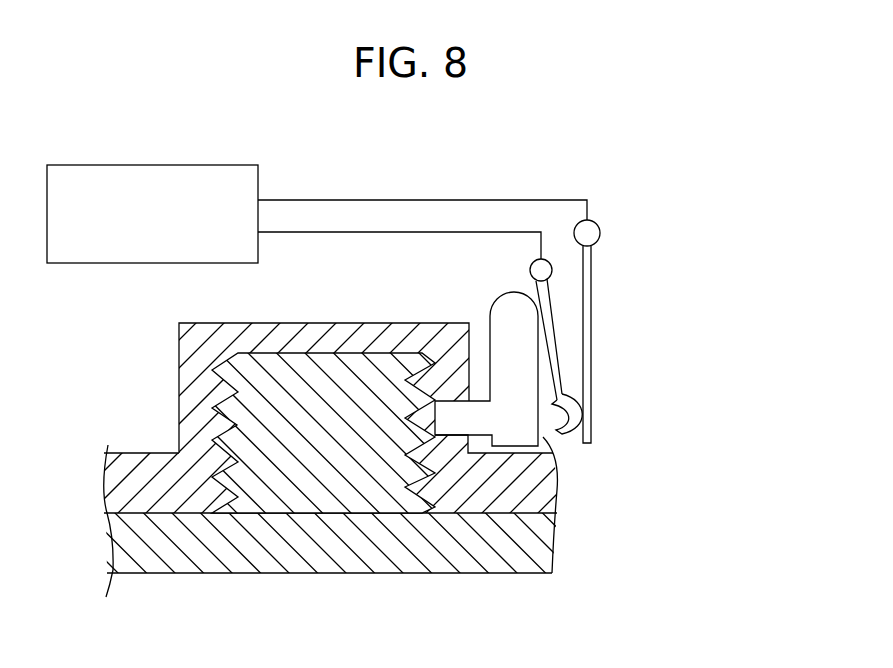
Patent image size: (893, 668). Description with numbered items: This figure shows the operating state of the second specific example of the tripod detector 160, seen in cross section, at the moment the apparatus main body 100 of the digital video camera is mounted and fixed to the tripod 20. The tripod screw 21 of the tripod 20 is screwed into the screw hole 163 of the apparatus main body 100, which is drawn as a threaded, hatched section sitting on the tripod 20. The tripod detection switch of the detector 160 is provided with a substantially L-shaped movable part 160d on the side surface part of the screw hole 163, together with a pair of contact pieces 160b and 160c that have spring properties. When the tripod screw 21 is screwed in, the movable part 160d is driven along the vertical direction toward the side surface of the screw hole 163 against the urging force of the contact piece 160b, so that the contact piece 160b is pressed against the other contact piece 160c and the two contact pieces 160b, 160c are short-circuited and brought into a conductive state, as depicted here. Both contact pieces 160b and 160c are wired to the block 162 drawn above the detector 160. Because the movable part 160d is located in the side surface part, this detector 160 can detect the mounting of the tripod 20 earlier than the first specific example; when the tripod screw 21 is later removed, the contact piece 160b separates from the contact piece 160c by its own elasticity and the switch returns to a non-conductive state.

The power supply 162 is at (153, 165).
The tripod detector 160 is at (613, 359).
The contact piece 160b is at (556, 347).
The contact piece 160c is at (593, 292).
The movable part 160d is at (557, 450).
The screw hole 163 is at (233, 390).
The apparatus main body 100 is at (128, 490).
The tripod 20 is at (330, 569).
The tripod screw 21 is at (340, 573).